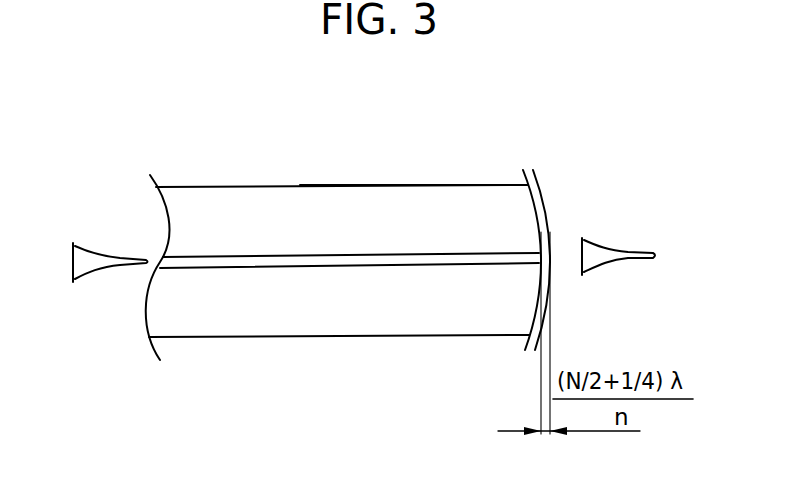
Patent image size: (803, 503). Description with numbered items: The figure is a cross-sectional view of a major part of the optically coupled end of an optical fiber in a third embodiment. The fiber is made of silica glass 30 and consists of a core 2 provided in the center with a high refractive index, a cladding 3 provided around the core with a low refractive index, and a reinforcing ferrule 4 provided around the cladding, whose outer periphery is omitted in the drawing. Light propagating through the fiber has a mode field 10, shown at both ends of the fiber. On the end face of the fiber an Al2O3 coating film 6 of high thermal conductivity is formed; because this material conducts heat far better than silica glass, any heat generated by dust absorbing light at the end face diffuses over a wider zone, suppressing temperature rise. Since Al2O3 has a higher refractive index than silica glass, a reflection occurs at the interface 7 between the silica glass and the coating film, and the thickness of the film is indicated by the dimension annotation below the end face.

The core 2 is at (226, 257).
The cladding 3 is at (295, 198).
The reinforcing ferrule 4 is at (445, 177).
The Al2O3 coating film 6 is at (537, 190).
The interface 7 is at (540, 258).
The mode field 10 is at (108, 277).
The silica glass 30 is at (310, 136).